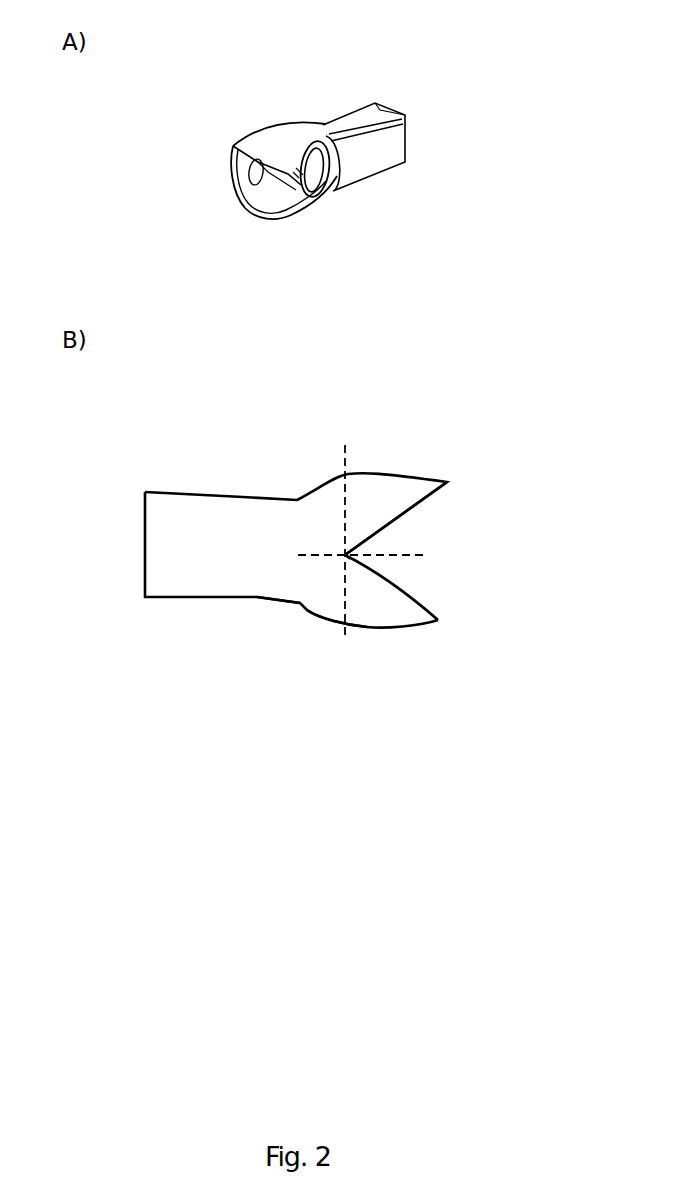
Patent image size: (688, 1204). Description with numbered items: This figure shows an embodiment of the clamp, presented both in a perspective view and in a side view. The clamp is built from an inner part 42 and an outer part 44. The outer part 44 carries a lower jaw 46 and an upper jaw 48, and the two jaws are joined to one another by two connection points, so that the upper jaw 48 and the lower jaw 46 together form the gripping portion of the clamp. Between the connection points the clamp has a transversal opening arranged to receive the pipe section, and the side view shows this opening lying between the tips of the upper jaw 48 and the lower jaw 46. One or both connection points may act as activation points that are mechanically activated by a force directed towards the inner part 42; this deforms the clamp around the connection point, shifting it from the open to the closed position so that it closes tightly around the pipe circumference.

The inner part 42 is at (323, 618).
The outer part 44 is at (363, 623).
The lower jaw 46 is at (408, 605).
The upper jaw 48 is at (398, 512).